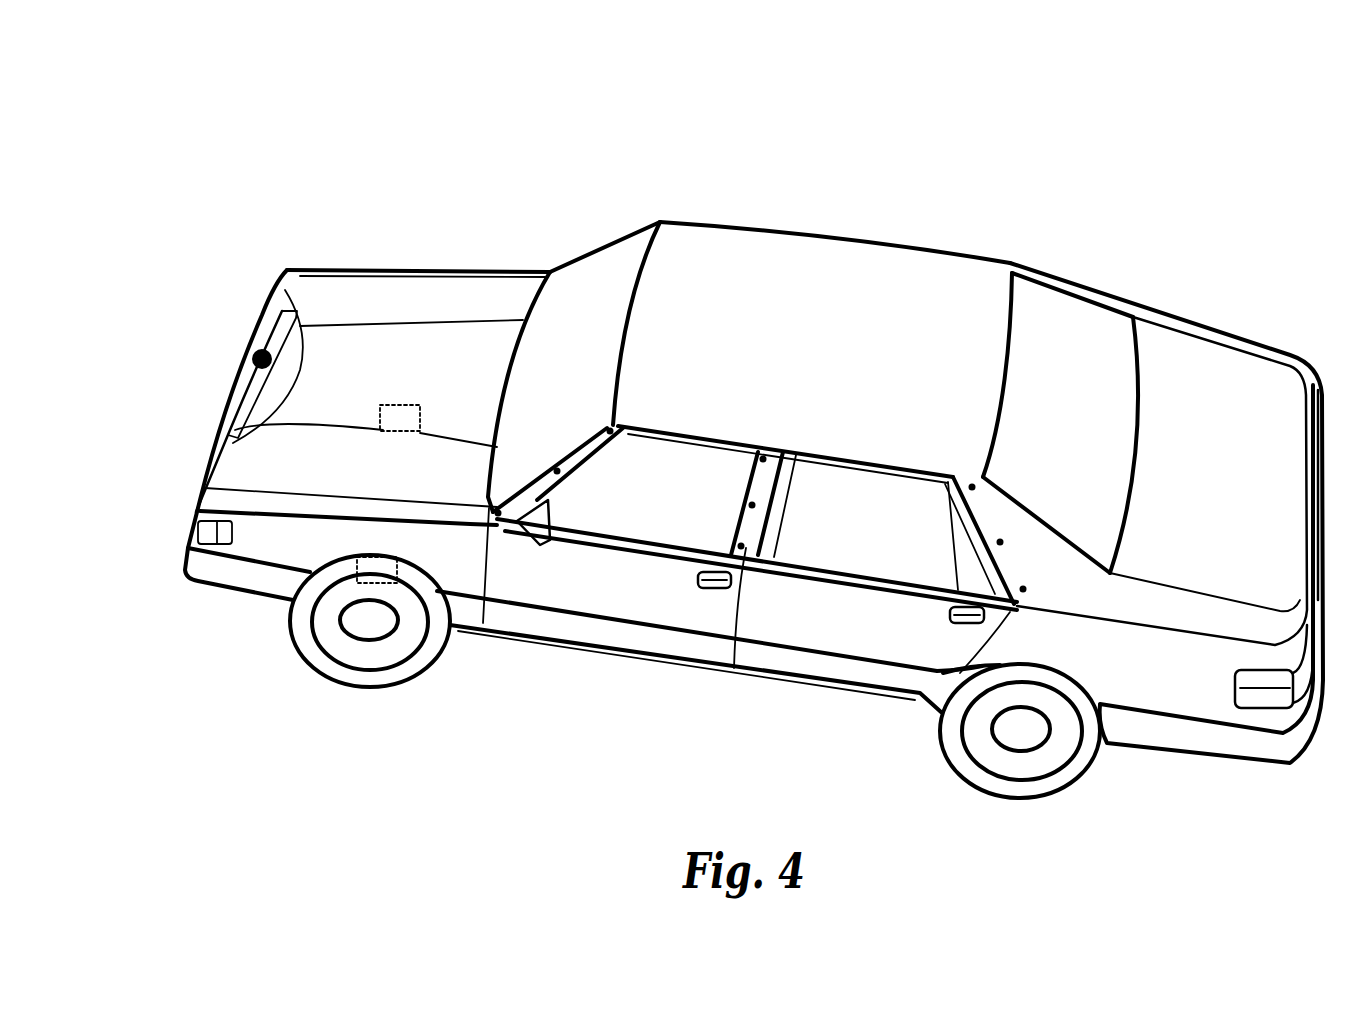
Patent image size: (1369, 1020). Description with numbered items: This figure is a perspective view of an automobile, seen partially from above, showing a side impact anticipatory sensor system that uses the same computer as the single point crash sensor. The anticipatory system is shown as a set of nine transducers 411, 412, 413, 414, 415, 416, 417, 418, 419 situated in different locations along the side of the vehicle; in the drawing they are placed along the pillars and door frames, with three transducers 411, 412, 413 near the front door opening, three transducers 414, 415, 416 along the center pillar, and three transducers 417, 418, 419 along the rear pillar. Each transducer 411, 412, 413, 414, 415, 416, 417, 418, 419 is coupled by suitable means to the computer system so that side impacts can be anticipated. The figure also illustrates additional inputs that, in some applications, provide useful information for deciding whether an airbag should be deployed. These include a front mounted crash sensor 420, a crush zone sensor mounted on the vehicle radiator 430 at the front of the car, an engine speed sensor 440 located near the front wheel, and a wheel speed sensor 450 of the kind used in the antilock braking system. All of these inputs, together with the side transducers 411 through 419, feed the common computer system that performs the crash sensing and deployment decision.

The transducer 411 is at (498, 513).
The transducer 412 is at (557, 471).
The transducer 413 is at (610, 431).
The transducer 414 is at (741, 546).
The transducer 415 is at (752, 505).
The transducer 416 is at (763, 459).
The transducer 417 is at (972, 487).
The transducer 418 is at (1000, 542).
The transducer 419 is at (1023, 589).
The front mounted crash sensor 420 is at (252, 349).
The vehicle radiator 430 is at (284, 311).
The engine speed sensor 440 is at (357, 562).
The wheel speed sensor 450 is at (382, 432).